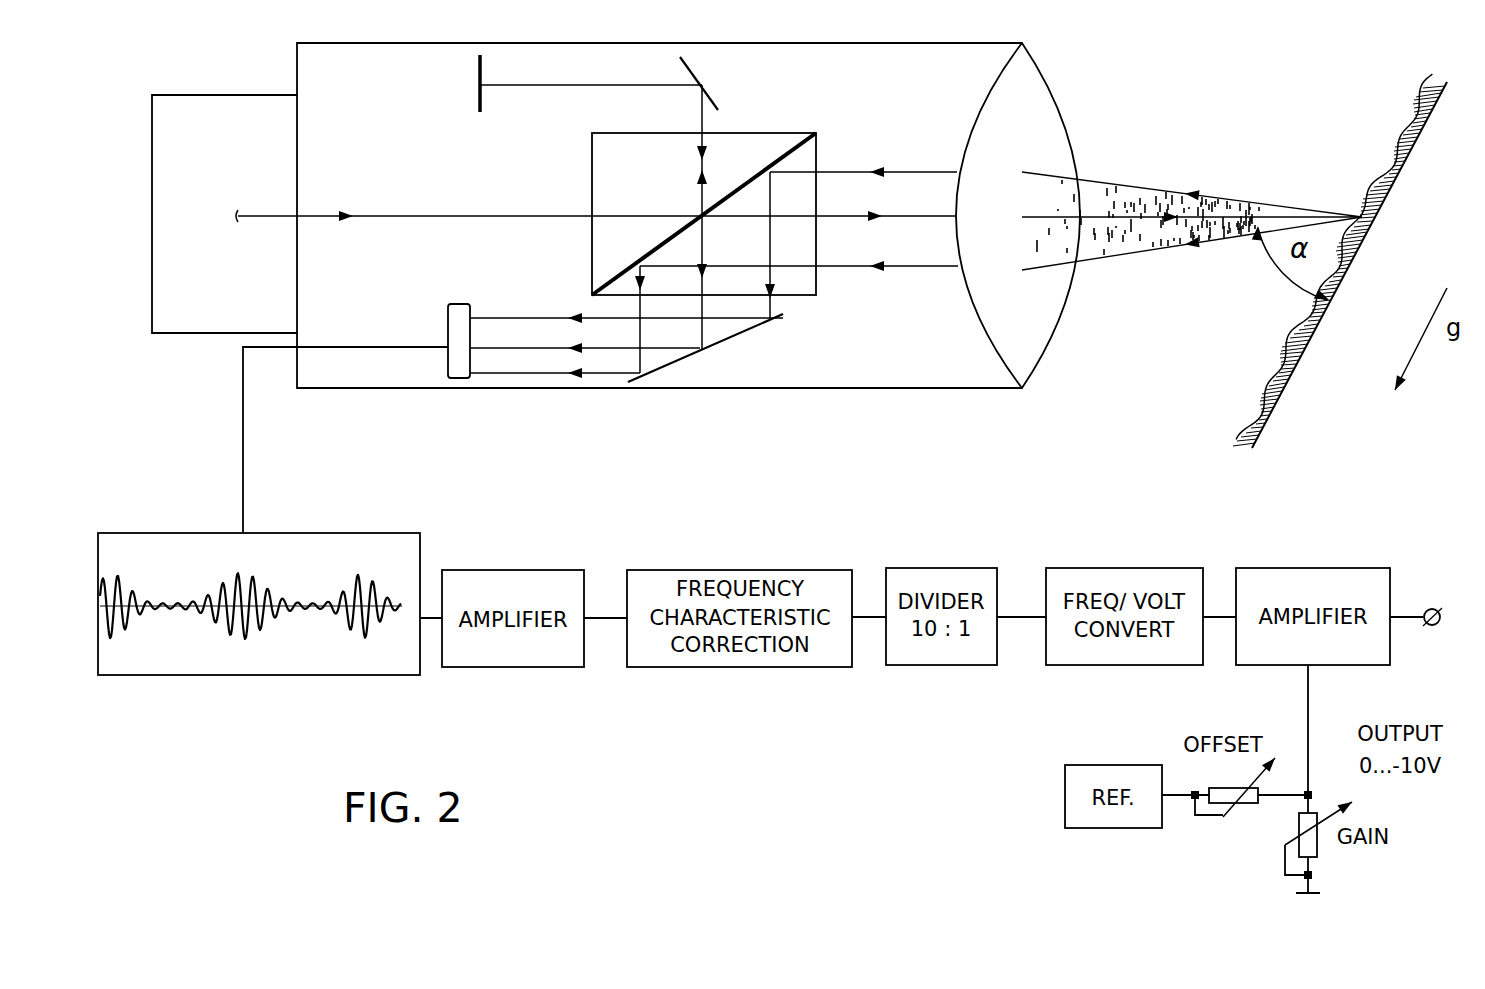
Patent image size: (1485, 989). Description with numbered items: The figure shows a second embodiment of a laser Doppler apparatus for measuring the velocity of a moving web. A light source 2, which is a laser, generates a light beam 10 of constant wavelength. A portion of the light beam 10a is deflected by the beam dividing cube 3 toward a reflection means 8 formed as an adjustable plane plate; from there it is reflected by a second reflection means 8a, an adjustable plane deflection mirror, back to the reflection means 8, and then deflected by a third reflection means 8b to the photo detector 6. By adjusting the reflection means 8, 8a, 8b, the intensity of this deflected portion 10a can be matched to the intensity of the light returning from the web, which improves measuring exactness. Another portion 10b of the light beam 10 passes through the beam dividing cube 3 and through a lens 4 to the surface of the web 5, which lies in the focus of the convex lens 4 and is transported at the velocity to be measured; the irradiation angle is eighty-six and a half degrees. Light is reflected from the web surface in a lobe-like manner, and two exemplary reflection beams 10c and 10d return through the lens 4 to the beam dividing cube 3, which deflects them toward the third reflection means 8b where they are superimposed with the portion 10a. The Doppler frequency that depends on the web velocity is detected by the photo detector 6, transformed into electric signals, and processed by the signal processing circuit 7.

The light source 2 is at (255, 215).
The beam dividing cube 3 is at (843, 183).
The lens 4 is at (1057, 152).
The web 5 is at (1407, 172).
The photo detector 6 is at (591, 327).
The signal processing circuit 7 is at (308, 542).
The reflection means 8 is at (616, 83).
The second reflection means 8a is at (436, 83).
The third reflection means 8b is at (721, 348).
The light beam 10 is at (487, 215).
The portion of the light beam 10a is at (703, 168).
The portion of the light beam 10b is at (923, 217).
The reflection beam 10c is at (1235, 197).
The reflection beam 10d is at (1217, 247).